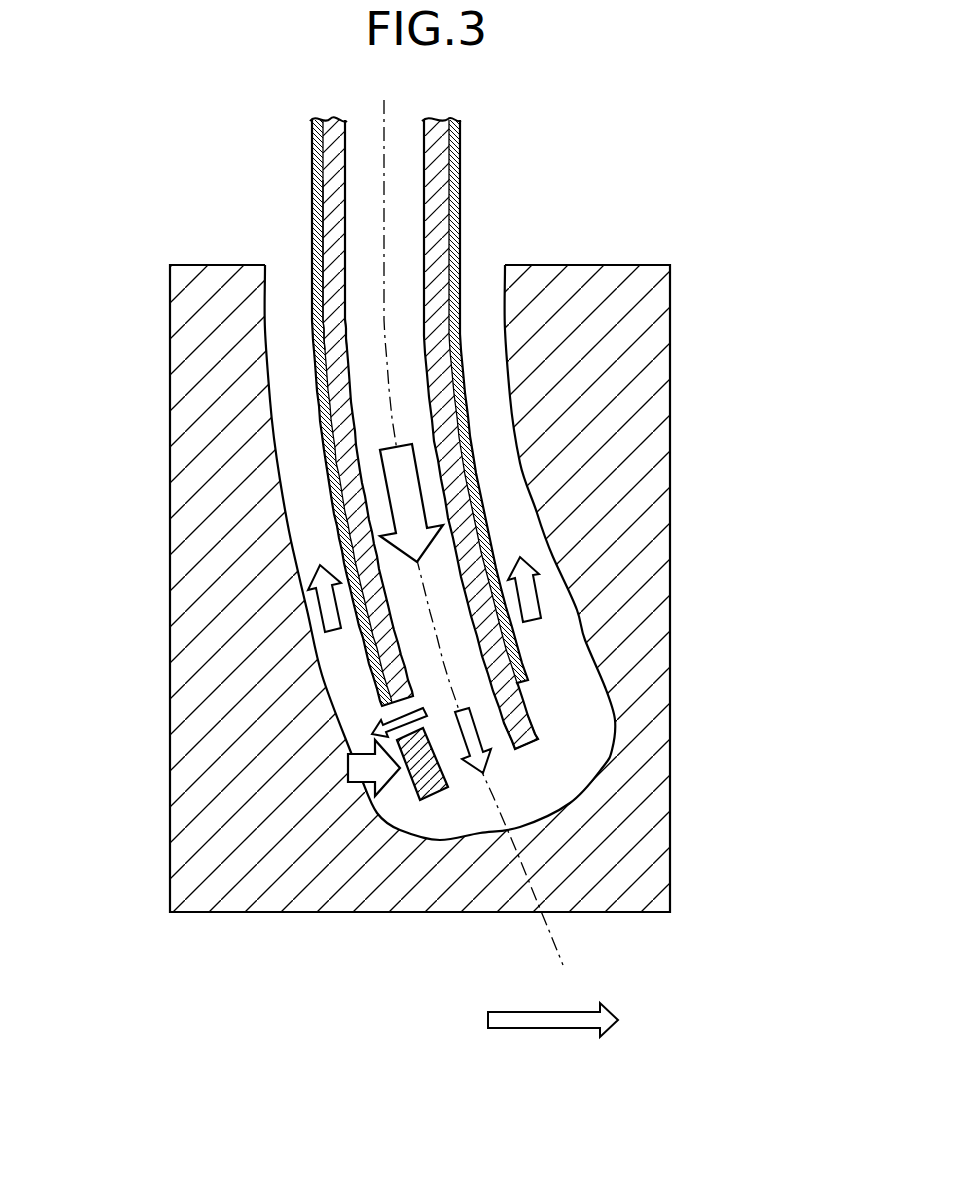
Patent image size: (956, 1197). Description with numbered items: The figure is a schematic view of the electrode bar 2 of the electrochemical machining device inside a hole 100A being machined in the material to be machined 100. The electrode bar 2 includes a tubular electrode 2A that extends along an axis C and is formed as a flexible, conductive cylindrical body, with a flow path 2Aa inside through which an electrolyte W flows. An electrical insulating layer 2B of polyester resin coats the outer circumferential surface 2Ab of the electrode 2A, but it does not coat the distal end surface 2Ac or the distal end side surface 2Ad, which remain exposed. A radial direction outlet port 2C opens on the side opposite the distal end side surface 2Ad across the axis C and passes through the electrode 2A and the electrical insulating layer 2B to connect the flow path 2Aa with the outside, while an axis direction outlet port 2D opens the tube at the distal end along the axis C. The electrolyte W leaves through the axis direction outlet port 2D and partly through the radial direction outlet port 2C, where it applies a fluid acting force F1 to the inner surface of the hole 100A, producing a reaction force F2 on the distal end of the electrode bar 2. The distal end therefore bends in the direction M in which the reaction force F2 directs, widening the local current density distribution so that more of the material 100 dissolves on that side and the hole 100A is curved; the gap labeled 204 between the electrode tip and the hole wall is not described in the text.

The electrode bar 2 is at (498, 547).
The electrode 2A is at (336, 143).
The flow path 2Aa is at (367, 243).
The outer circumferential surface 2Ab is at (322, 212).
The distal end surface 2Ac is at (532, 755).
The distal end side surface 2Ad is at (532, 722).
The electrical insulating layer 2B is at (318, 178).
The radial direction outlet port 2C is at (387, 718).
The axis direction outlet port 2D is at (507, 758).
The material to be machined 100 is at (650, 483).
The holes 100A is at (509, 351).
The gap 204 is at (455, 634).
The electrolyte W is at (407, 522).
The direction M is at (548, 1030).
The fluid acting force F1 is at (372, 733).
The reaction force F2 is at (365, 775).
The axis C is at (383, 307).